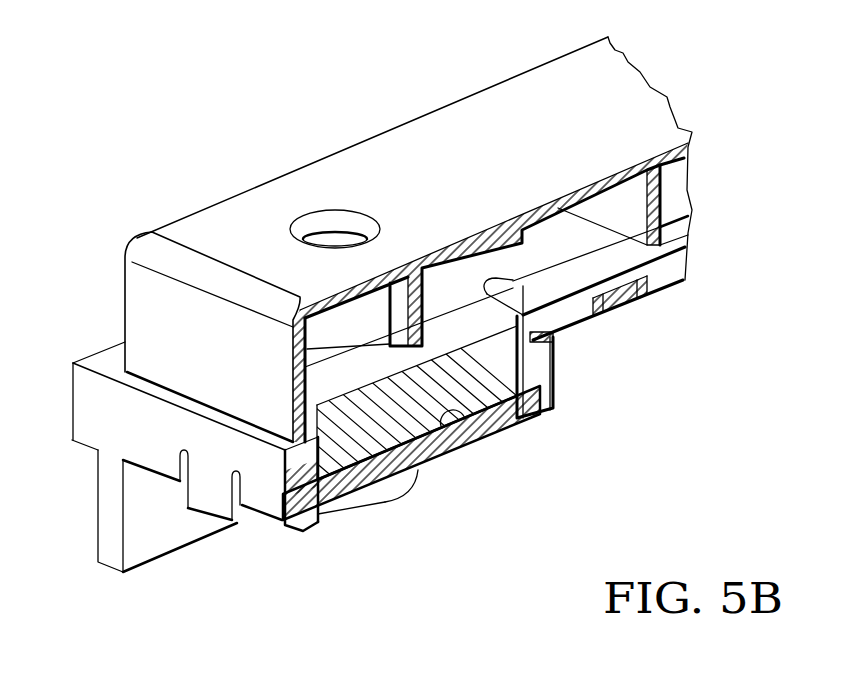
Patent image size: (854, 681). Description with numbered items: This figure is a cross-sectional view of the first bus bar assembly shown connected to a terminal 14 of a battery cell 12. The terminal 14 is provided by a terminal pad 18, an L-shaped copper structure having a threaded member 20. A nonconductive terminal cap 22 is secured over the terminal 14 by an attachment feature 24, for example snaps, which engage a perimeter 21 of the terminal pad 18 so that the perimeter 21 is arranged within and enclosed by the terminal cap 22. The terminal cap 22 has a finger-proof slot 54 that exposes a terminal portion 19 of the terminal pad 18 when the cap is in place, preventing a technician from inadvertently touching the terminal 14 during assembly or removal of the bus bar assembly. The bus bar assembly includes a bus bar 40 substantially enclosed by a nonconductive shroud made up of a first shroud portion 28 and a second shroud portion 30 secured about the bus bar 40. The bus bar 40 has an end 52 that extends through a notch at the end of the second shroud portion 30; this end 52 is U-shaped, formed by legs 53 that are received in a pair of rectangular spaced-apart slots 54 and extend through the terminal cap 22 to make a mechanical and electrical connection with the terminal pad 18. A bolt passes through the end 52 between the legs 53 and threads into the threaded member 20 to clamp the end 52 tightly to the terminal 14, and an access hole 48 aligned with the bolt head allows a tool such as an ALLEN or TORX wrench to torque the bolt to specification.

The battery cell 12 is at (95, 7).
The terminal 14 is at (82, 517).
The terminal pad 18 is at (358, 482).
The terminal portion 19 is at (465, 427).
The threaded member 20 is at (387, 493).
The perimeter 21 is at (280, 518).
The terminal cap 22 is at (75, 398).
The attachment feature 24 is at (210, 500).
The first shroud portion 28 is at (633, 123).
The second shroud portion 30 is at (667, 280).
The bus bar 40 is at (670, 235).
The access hole 48 is at (318, 225).
The end 52 is at (560, 346).
The legs 53 is at (480, 397).
The finger-proof slot 54 is at (353, 475).